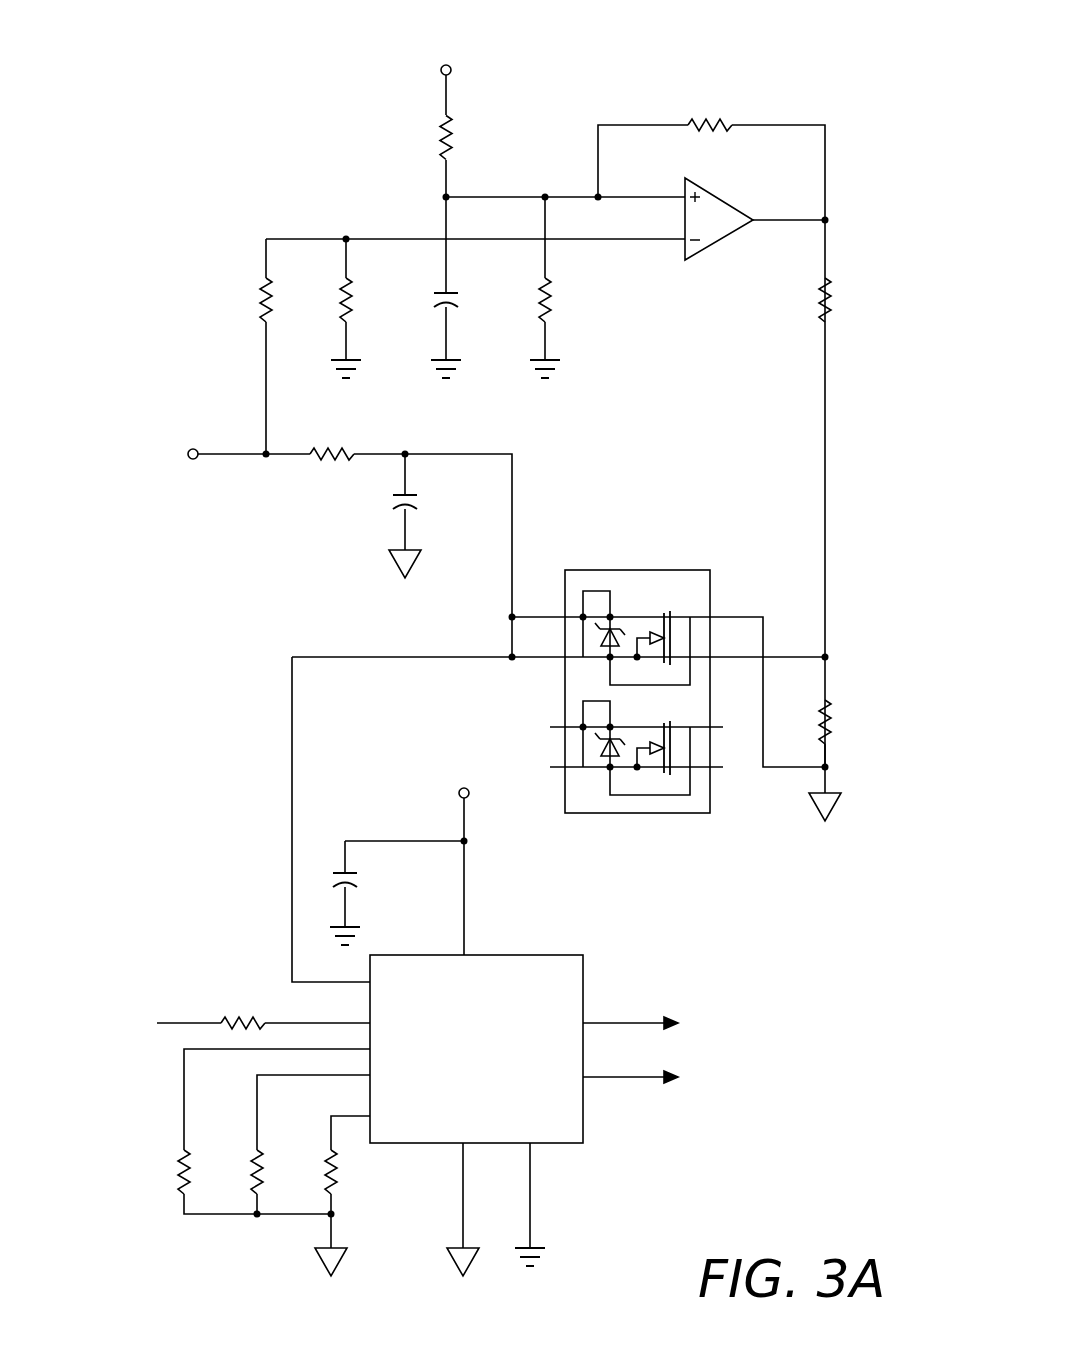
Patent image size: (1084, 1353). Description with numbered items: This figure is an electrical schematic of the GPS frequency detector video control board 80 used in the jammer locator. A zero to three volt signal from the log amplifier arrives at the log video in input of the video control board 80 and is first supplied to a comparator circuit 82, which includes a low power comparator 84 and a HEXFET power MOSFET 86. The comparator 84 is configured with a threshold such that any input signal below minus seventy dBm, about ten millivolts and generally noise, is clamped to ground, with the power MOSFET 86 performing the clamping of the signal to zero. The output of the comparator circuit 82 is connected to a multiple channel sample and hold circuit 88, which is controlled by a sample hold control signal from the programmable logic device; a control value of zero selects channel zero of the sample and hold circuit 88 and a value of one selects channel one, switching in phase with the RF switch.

The video control board 80 is at (325, 617).
The comparator circuit 82 is at (318, 177).
The low power comparator 84 is at (722, 240).
The HEXFET power MOSFET 86 is at (640, 578).
The multiple channel sample and hold circuit 88 is at (546, 966).